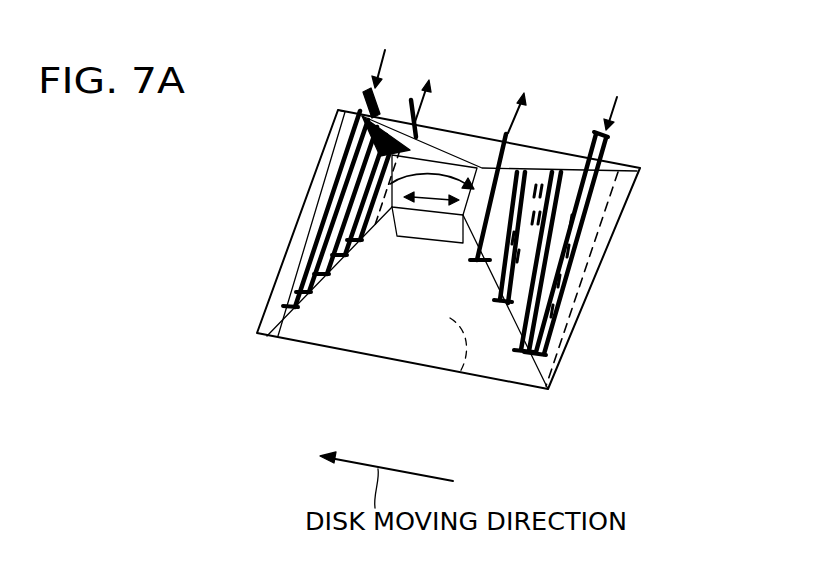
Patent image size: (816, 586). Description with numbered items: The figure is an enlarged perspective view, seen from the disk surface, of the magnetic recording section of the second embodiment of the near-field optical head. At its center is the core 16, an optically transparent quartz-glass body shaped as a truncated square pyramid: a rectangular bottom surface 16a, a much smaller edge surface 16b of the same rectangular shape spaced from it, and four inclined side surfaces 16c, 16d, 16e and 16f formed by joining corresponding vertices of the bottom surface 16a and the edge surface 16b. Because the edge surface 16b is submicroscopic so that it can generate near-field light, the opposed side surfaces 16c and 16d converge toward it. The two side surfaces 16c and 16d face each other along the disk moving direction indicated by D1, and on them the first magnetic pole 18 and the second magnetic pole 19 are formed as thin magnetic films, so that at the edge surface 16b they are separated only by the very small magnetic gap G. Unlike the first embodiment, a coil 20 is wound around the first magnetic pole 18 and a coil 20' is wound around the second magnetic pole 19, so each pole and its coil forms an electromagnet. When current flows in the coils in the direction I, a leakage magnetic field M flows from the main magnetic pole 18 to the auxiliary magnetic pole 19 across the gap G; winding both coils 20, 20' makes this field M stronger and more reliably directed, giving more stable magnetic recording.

The core 16 is at (619, 154).
The bottom surface 16a is at (457, 372).
The edge surface 16b is at (428, 150).
The side surface 16c is at (284, 278).
The side surface 16d is at (628, 198).
The side surface 16e is at (525, 153).
The side surface 16f is at (372, 338).
The first magnetic pole 18 is at (337, 207).
The second magnetic pole 19 is at (553, 258).
The coil 20 is at (311, 197).
The coil 20' is at (625, 243).
The current direction I is at (420, 104).
The direction D1 is at (607, 118).
The magnetic field M is at (460, 158).
The magnetic gap G is at (428, 210).